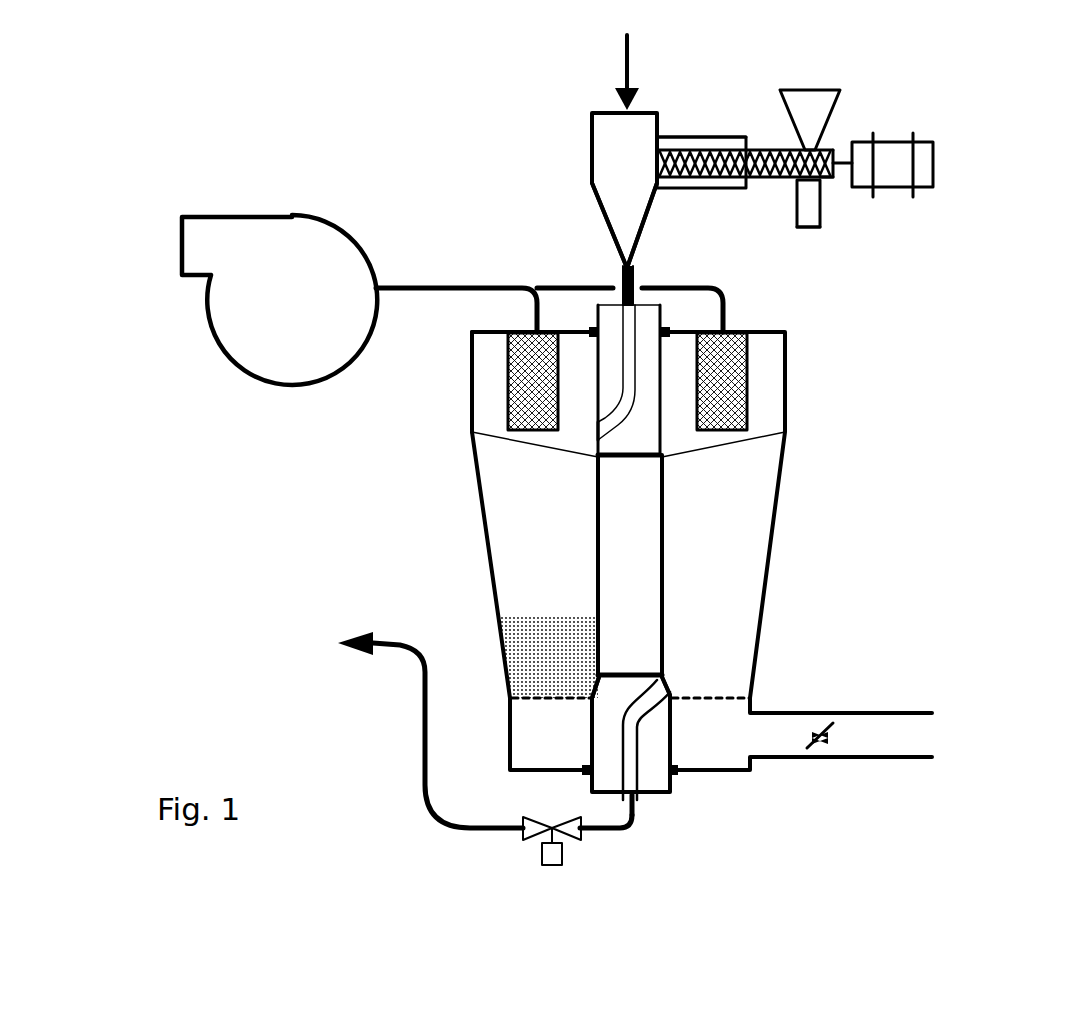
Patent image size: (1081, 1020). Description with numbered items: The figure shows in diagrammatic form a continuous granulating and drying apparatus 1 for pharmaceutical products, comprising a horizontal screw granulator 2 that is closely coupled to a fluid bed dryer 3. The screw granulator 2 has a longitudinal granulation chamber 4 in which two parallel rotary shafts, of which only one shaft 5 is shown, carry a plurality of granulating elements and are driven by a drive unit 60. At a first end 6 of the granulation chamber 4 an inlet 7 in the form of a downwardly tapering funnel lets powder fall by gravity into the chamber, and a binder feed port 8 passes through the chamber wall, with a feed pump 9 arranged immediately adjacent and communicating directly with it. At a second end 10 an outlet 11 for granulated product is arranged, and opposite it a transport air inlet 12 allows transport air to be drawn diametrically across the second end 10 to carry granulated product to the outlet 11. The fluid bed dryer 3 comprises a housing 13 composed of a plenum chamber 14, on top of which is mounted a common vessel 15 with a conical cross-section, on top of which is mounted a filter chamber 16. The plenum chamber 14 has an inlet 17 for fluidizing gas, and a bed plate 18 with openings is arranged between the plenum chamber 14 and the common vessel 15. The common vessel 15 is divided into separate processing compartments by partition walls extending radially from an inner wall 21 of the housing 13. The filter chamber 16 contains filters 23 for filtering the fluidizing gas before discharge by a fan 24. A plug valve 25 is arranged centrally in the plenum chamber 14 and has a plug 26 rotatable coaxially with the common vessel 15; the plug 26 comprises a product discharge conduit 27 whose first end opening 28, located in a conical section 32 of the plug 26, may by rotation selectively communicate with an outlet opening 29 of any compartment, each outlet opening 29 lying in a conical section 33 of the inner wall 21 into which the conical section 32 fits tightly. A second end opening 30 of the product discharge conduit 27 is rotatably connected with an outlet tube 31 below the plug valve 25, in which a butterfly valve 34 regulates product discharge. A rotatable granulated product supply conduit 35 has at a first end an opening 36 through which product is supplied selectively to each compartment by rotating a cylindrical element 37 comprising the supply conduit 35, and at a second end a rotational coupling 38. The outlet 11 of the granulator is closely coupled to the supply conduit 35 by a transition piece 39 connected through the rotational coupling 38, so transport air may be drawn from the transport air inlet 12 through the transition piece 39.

The continuous granulating and drying apparatus 1 is at (938, 363).
The screw granulator 2 is at (876, 219).
The fluid bed dryer 3 is at (408, 530).
The granulation chamber 4 is at (763, 180).
The rotary shaft 5 is at (768, 150).
The first end 6 is at (833, 180).
The inlet 7 is at (828, 88).
The binder feed port 8 is at (797, 180).
The feed pump 9 is at (818, 227).
The second end 10 is at (670, 148).
The outlet 11 is at (627, 185).
The transport air inlet 12 is at (600, 112).
The housing 13 is at (782, 485).
The plenum chamber 14 is at (510, 735).
The common vessel 15 is at (490, 583).
The filter chamber 16 is at (473, 397).
The inlet 17 is at (878, 713).
The bed plate 18 is at (700, 697).
The inner wall 21 is at (597, 547).
The filter 23 is at (740, 382).
The fan 24 is at (318, 324).
The plug valve 25 is at (677, 790).
The plug 26 is at (607, 722).
The product discharge conduit 27 is at (623, 755).
The first end opening 28 is at (667, 690).
The outlet opening 29 is at (670, 695).
The second end opening 30 is at (640, 795).
The outlet tube 31 is at (475, 833).
The conical section 32 is at (605, 685).
The conical section 33 is at (590, 683).
The butterfly valve 34 is at (565, 845).
The granulated product supply conduit 35 is at (620, 413).
The opening 36 is at (600, 433).
The cylindrical element 37 is at (648, 318).
The rotational coupling 38 is at (620, 302).
The transition piece 39 is at (617, 213).
The drive unit 60 is at (892, 138).